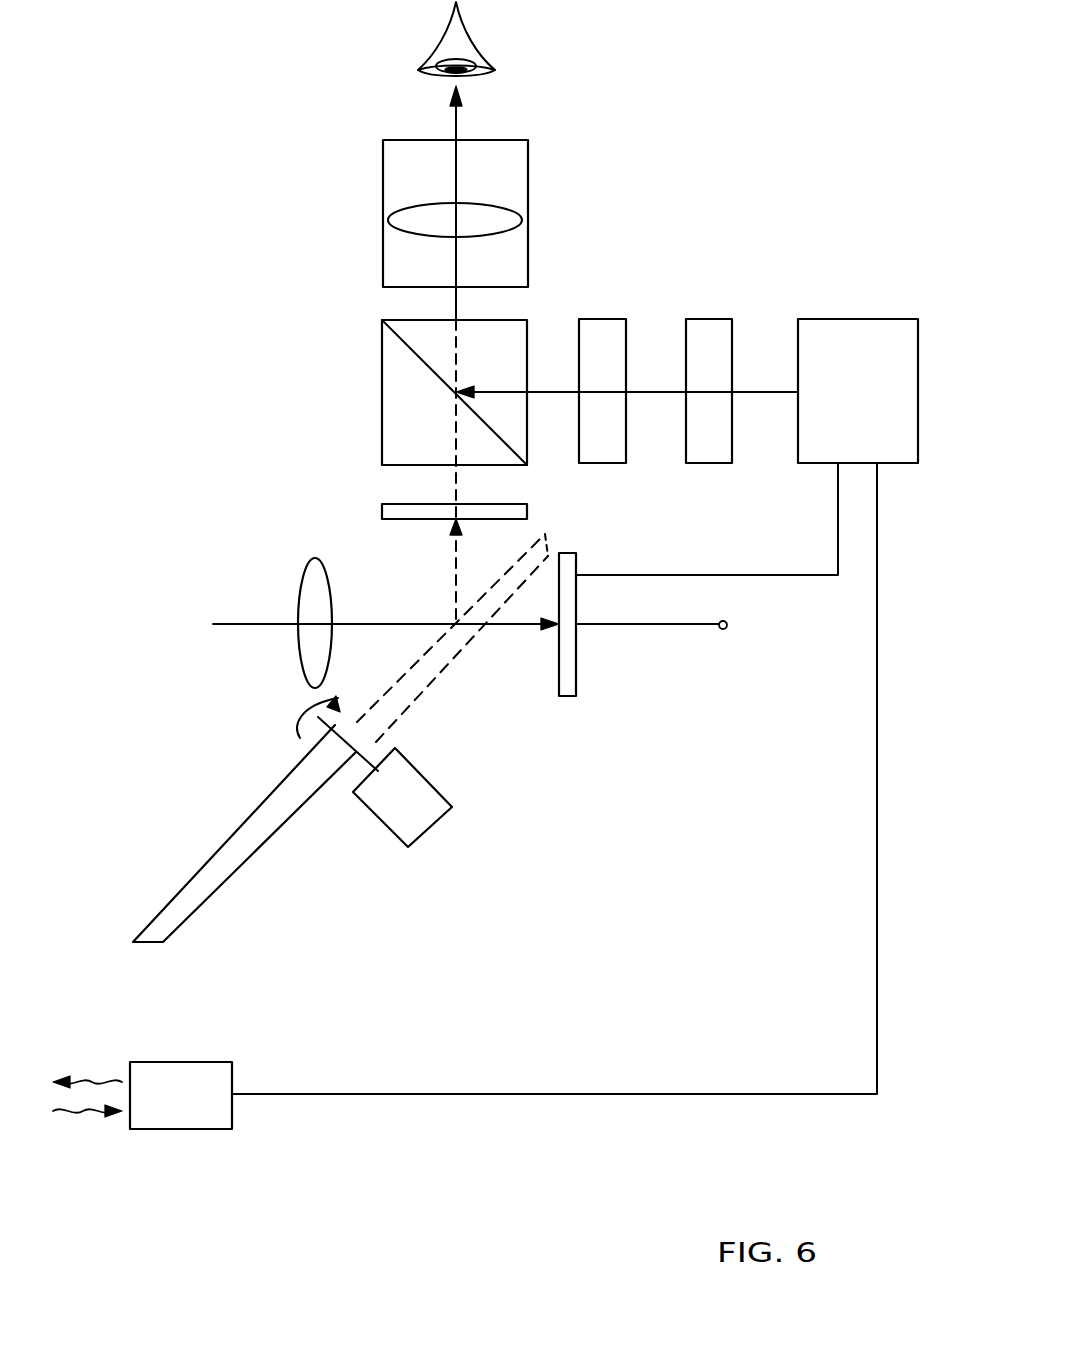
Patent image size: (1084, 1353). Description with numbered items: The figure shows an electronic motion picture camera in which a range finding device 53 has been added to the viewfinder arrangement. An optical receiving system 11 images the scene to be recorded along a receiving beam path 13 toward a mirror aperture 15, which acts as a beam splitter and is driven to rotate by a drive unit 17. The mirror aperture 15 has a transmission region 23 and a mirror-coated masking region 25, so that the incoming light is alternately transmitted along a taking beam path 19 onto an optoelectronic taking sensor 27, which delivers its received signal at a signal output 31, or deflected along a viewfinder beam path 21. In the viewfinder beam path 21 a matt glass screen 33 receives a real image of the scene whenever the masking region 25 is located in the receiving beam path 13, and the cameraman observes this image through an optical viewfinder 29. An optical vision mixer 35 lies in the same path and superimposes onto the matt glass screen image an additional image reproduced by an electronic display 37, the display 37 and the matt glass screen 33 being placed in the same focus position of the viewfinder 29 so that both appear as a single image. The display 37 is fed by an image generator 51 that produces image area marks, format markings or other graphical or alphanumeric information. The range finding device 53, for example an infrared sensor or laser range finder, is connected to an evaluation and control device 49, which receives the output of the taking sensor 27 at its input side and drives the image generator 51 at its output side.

The optical receiving system 11 is at (298, 590).
The receiving beam path 13 is at (388, 622).
The mirror aperture 15 is at (228, 890).
The drive unit 17 is at (452, 822).
The taking beam path 19 is at (500, 628).
The viewfinder beam path 21 is at (455, 305).
The transmission region 23 is at (425, 680).
The masking region 25 is at (280, 820).
The taking sensor 27 is at (577, 668).
The viewfinder 29 is at (530, 168).
The signal output 31 is at (727, 626).
The matt glass screen 33 is at (382, 507).
The optical vision mixer 35 is at (382, 387).
The electronic display 37 is at (603, 319).
The evaluation and control device 49 is at (855, 319).
The image generator 51 is at (705, 319).
The range finding device 53 is at (172, 1130).